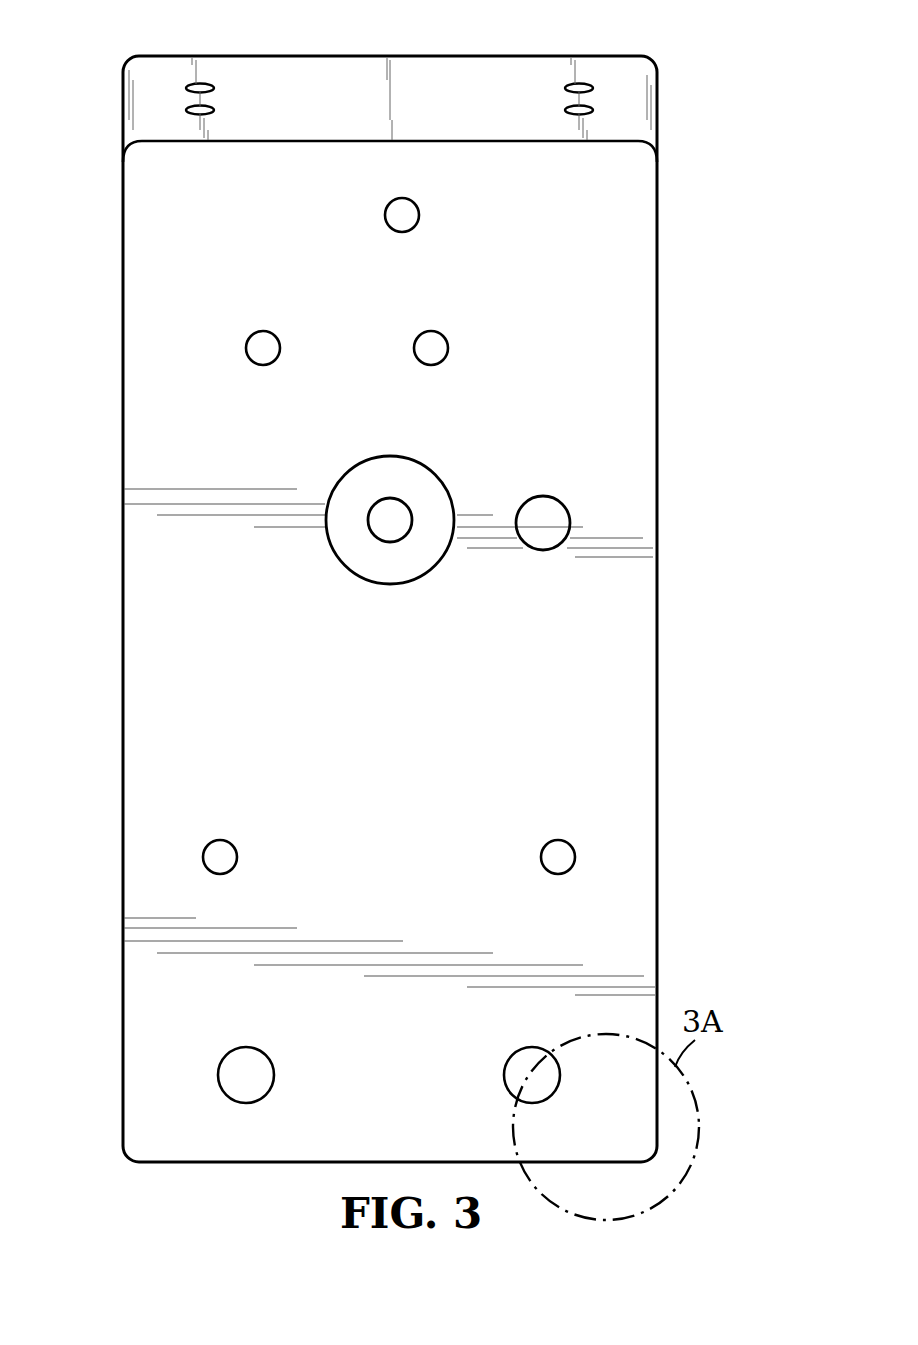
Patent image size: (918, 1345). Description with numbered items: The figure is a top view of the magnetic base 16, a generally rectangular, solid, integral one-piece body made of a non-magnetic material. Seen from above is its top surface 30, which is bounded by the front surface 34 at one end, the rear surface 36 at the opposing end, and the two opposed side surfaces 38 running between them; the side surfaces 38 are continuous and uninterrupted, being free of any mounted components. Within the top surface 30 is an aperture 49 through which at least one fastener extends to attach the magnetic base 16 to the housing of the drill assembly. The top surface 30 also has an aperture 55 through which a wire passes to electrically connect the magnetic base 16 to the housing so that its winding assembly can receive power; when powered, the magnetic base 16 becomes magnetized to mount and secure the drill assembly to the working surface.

The magnetic base 16 is at (722, 78).
The top surface 30 is at (620, 343).
The front surface 34 is at (558, 1164).
The rear surface 36 is at (480, 77).
The side surfaces 38 is at (122, 572).
The aperture 49 is at (418, 490).
The aperture 55 is at (560, 518).